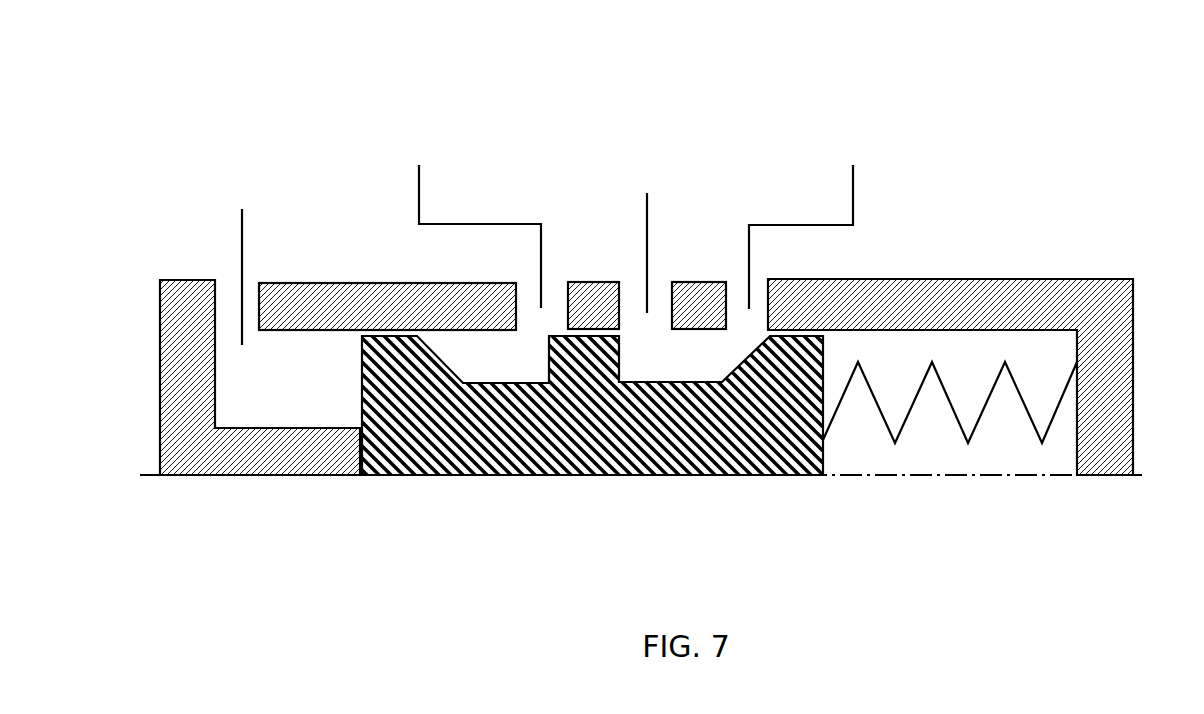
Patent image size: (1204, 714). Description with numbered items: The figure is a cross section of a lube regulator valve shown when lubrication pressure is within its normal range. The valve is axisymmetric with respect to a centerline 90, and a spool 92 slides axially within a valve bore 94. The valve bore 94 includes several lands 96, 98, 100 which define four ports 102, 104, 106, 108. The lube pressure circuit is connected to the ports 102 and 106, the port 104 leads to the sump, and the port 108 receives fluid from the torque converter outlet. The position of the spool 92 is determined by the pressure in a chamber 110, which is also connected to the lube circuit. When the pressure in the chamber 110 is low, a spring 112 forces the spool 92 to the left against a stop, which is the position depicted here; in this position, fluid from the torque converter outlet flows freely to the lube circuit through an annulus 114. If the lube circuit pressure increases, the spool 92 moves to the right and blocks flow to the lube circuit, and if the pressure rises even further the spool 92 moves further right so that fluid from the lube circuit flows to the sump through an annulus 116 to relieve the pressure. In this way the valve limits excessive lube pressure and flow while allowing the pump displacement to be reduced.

The centerline 90 is at (279, 477).
The spool 92 is at (360, 397).
The valve bore 94 is at (970, 280).
The land 96 is at (392, 281).
The land 98 is at (592, 282).
The land 100 is at (688, 282).
The port 102 is at (240, 240).
The port 104 is at (490, 222).
The port 106 is at (645, 255).
The port 108 is at (797, 225).
The chamber 110 is at (287, 363).
The spring 112 is at (948, 407).
The annulus 114 is at (670, 359).
The annulus 116 is at (494, 359).